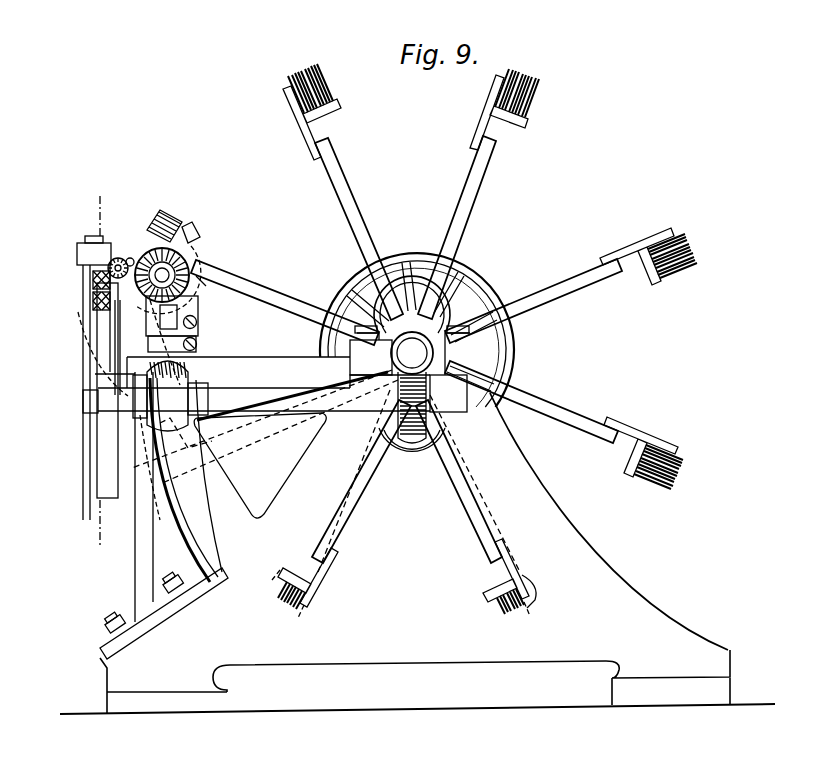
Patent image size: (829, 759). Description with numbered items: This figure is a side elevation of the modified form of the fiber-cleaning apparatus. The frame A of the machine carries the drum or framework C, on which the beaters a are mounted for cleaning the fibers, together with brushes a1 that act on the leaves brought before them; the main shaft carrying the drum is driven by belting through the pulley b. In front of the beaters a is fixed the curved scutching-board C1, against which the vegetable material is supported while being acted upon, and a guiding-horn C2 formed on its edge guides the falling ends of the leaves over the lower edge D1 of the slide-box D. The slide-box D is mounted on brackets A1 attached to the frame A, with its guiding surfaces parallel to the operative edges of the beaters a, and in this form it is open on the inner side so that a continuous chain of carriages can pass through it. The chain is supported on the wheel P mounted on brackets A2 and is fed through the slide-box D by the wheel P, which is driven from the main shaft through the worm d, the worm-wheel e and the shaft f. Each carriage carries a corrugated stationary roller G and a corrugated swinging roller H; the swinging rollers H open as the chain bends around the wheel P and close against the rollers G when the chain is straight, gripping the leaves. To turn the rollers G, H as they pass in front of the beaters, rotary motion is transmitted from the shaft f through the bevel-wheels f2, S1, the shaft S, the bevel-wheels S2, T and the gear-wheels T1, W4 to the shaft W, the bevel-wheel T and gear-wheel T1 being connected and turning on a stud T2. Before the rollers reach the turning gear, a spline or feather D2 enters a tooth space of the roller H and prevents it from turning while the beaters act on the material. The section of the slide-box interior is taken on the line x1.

The frame A is at (417, 547).
The brackets A1 is at (198, 308).
The brackets A2 is at (135, 571).
The beaters a is at (505, 575).
The brushes a1 is at (650, 492).
The pulley b is at (466, 278).
The drum or framework C is at (350, 184).
The scutching-board C1 is at (180, 538).
The guiding-horn C2 is at (88, 335).
The worm d is at (425, 347).
The slide-box D is at (83, 275).
The lower edge of slide-box D1 is at (124, 320).
The spline or feather D2 is at (77, 252).
The worm-wheel e is at (412, 450).
The shaft f is at (337, 400).
The bevel-wheel f2 is at (190, 382).
The stationary rollers G is at (93, 302).
The swinging rollers H is at (93, 282).
The chain wheel P is at (97, 470).
The shaft S is at (197, 321).
The bevel-wheel S1 is at (95, 374).
The bevel-wheel S2 is at (206, 280).
The bevel-wheel T is at (189, 264).
The gear-wheel T1 is at (158, 222).
The stud T2 is at (190, 246).
The shaft W is at (121, 258).
The gear-wheel W4 is at (110, 248).
The section line x1 is at (112, 556).